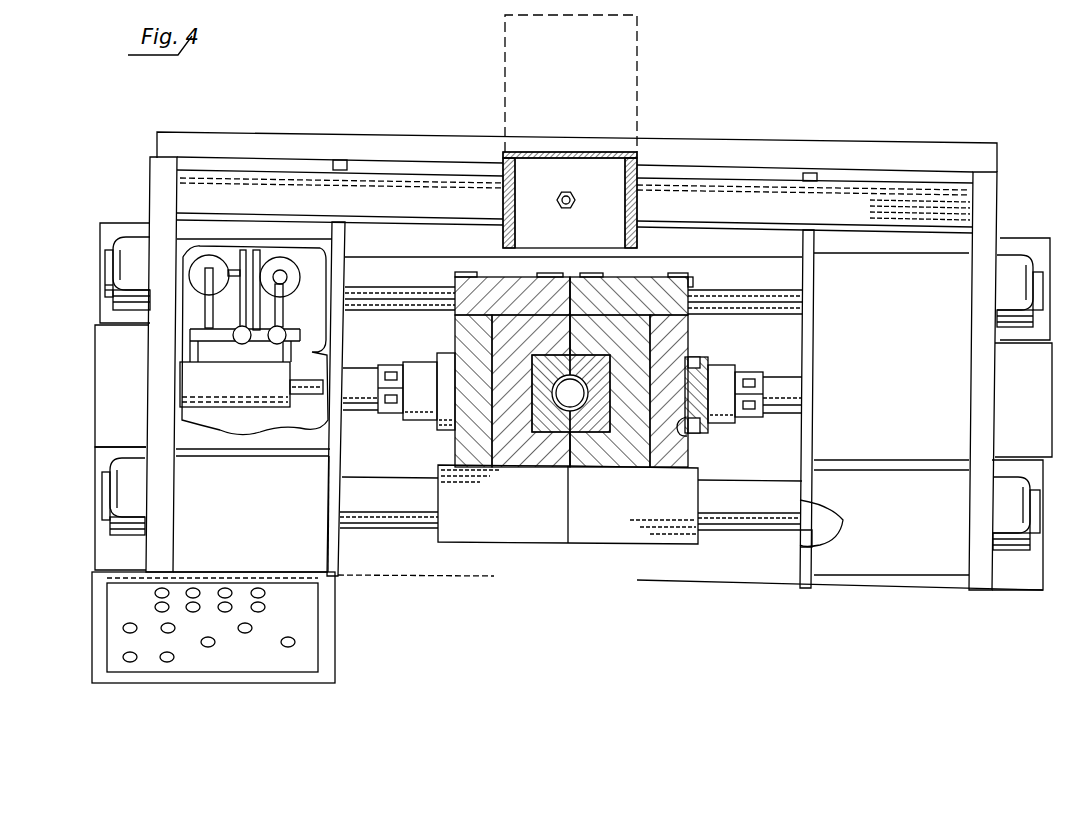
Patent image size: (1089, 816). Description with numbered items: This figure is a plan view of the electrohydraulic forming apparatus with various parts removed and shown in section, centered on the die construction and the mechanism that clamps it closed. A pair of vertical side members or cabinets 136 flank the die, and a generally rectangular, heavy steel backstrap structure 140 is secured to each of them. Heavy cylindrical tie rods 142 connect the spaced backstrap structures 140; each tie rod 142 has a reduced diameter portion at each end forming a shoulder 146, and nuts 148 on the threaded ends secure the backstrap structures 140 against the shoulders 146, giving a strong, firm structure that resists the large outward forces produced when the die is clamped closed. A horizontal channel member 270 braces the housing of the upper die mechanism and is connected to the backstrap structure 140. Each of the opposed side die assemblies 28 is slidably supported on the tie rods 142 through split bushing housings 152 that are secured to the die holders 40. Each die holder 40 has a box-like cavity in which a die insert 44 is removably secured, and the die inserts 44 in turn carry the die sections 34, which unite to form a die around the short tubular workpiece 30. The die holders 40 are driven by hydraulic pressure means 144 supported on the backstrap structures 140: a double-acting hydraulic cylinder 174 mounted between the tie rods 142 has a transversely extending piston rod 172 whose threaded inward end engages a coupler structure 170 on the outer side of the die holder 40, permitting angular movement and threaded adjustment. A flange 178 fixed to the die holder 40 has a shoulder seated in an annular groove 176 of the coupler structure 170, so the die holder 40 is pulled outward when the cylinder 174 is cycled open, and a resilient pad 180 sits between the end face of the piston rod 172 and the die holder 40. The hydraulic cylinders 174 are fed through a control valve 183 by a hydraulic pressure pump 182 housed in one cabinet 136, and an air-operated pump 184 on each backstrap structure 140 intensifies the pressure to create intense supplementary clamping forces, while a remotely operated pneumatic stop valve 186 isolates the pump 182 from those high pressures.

The backstrap structure 140 is at (152, 170).
The nut 148 is at (133, 240).
The air-operated pump 184 is at (209, 262).
The hydraulic pressure pump 182 is at (283, 262).
The tie rod 142 is at (400, 260).
The pneumatic stop valve 186 is at (240, 327).
The control valve 183 is at (283, 330).
The hydraulic pressure means 144 is at (322, 347).
The hydraulic cylinder 174 is at (220, 394).
The side die assembly 28 is at (450, 320).
The coupler structure 170 is at (420, 362).
The flange 178 is at (698, 358).
The piston rod 172 is at (355, 410).
The tubular workpiece 30 is at (570, 393).
The annular groove 176 is at (702, 427).
The pad 180 is at (687, 436).
The die holder 40 is at (455, 447).
The die section 34 is at (580, 425).
The die insert 44 is at (620, 455).
The bushing housing 152 is at (514, 508).
The cabinet 136 is at (230, 504).
The shoulder 146 is at (804, 548).
The channel member 270 is at (873, 182).